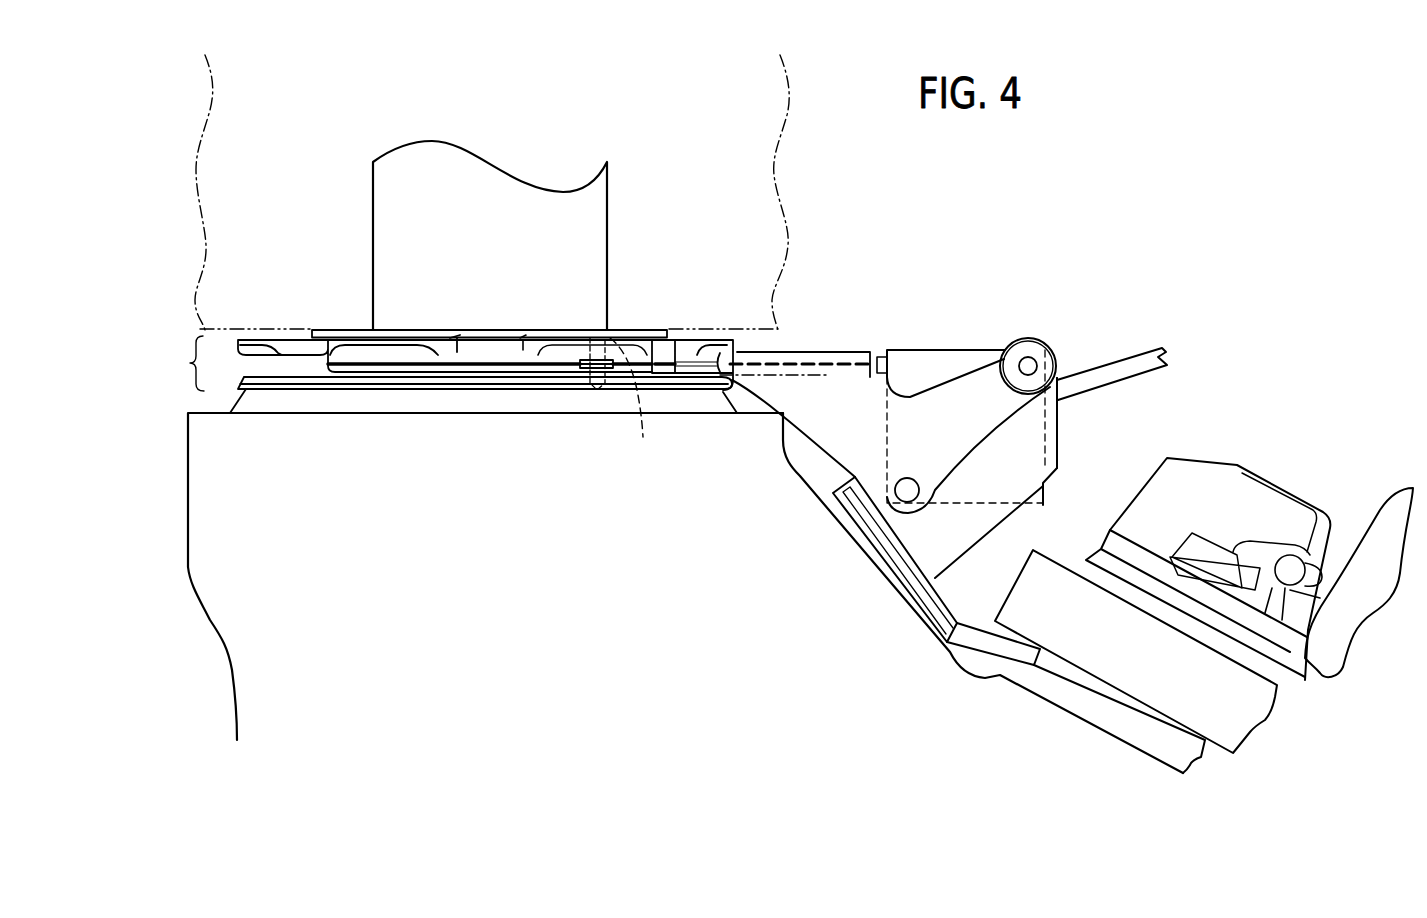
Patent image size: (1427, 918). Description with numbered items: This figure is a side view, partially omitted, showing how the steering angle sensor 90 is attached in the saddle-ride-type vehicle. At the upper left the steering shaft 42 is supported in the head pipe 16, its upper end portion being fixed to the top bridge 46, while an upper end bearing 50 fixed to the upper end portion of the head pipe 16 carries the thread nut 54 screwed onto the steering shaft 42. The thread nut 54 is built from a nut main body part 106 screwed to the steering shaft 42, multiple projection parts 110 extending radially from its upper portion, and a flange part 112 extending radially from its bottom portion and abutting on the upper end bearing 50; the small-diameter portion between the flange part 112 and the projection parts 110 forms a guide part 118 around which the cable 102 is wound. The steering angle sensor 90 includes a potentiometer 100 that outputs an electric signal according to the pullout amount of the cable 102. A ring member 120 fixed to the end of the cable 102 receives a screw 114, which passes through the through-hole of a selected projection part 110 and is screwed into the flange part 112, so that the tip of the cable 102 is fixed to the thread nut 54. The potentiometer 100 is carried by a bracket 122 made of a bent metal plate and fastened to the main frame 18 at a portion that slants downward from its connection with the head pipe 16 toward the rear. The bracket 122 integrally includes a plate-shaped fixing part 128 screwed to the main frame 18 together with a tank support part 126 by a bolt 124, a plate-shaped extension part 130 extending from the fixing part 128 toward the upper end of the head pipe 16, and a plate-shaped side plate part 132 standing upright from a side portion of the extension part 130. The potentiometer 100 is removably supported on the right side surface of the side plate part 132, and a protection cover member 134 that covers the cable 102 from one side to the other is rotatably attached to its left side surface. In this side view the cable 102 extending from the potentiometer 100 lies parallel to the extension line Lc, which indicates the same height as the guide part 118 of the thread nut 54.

The head pipe 16 is at (247, 645).
The main frame 18 is at (1015, 710).
The steering shaft 42 is at (590, 235).
The top bridge 46 is at (200, 213).
The upper end bearing 50 is at (352, 403).
The thread nut 54 is at (183, 363).
The steering angle sensor 90 is at (913, 347).
The potentiometer 100 is at (970, 352).
The cable 102 is at (698, 367).
The nut main body part 106 is at (487, 337).
The projection parts 110 is at (278, 349).
The flange part 112 is at (307, 383).
The screw 114 is at (636, 403).
The guide part 118 is at (421, 370).
The ring member 120 is at (593, 370).
The bracket 122 is at (880, 568).
The bolt 124 is at (1223, 563).
The tank support part 126 is at (1123, 677).
The fixing part 128 is at (1155, 745).
The extension part 130 is at (883, 535).
The side plate part 132 is at (1058, 432).
The protection cover member 134 is at (813, 357).
The extension line Lc is at (823, 377).